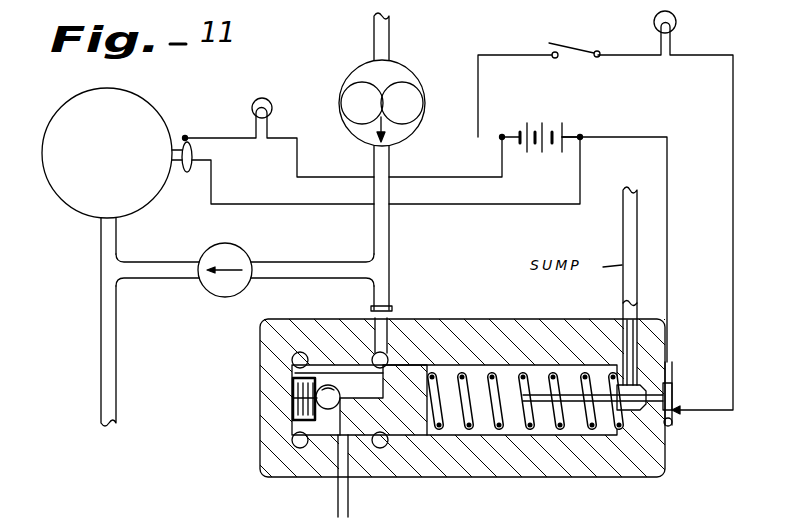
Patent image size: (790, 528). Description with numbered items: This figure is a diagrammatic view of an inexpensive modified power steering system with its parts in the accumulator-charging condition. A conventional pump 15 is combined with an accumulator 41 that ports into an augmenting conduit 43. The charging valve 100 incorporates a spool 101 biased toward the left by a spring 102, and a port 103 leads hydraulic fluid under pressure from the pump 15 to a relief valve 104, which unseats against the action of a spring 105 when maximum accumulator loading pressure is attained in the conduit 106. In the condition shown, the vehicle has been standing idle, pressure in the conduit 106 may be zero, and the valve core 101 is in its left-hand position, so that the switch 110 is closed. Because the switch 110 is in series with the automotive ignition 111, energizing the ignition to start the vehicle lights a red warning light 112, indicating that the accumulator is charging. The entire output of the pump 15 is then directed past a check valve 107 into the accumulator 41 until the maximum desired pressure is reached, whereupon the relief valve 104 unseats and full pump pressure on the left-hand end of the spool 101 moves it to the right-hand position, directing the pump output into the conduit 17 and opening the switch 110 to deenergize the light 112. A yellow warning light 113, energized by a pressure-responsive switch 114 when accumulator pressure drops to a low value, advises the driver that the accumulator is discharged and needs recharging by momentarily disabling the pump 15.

The accumulator 41 is at (63, 190).
The augmenting conduit 43 is at (113, 373).
The pressure-responsive switch 114 is at (186, 137).
The yellow warning light 113 is at (267, 100).
The pump 15 is at (413, 129).
The automotive ignition 111 is at (571, 46).
The red warning light 112 is at (675, 15).
The check valve 107 is at (241, 251).
The conduit 106 is at (307, 263).
The spool 101 is at (347, 357).
The spring 102 is at (453, 375).
The relief valve 104 is at (292, 370).
The spring 105 is at (293, 403).
The conduit 17 is at (338, 500).
The port 103 is at (367, 400).
The charging valve 100 is at (424, 463).
The switch 110 is at (672, 387).